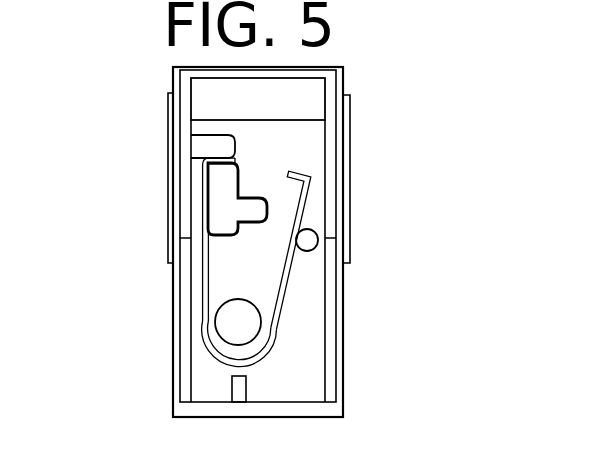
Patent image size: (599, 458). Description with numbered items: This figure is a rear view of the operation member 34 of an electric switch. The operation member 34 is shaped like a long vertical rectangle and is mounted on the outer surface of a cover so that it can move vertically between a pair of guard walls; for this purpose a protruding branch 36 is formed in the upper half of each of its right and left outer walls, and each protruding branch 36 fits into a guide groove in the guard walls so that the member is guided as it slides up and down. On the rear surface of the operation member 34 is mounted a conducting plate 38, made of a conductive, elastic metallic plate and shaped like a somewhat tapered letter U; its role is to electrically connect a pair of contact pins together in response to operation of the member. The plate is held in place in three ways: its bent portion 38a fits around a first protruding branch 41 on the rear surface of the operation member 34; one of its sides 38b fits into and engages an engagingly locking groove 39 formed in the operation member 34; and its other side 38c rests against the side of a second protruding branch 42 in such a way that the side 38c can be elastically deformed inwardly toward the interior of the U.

The operation member 34 is at (292, 98).
The protruding branch 36 is at (351, 157).
The conducting plate 38 is at (202, 289).
The bent portion 38a is at (279, 328).
The side of the plate 38b is at (206, 178).
The other side 38c is at (308, 192).
The engagingly locking groove 39 is at (218, 156).
The first protruding branch 41 is at (222, 322).
The second protruding branch 42 is at (306, 241).